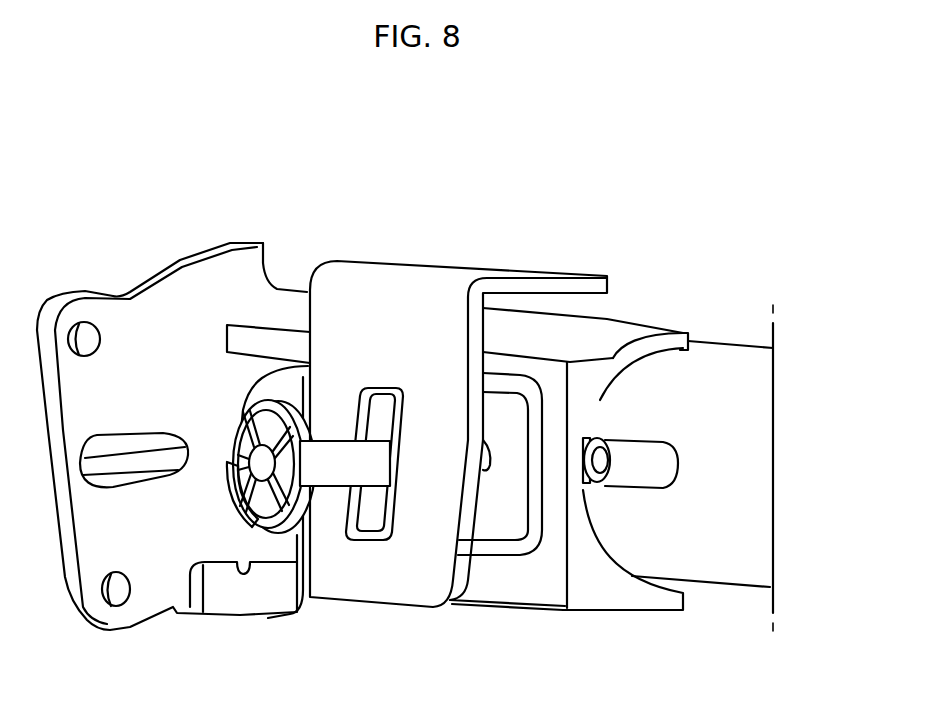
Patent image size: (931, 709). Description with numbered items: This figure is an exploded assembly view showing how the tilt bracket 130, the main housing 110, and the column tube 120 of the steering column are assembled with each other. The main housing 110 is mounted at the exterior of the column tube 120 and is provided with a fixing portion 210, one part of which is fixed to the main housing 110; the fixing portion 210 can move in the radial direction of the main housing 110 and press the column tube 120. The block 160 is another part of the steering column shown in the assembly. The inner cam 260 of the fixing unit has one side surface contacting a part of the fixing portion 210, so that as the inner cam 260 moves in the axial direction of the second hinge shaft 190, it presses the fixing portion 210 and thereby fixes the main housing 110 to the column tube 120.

The main housing 110 is at (603, 328).
The column tube 120 is at (765, 462).
The tilt bracket 130 is at (486, 275).
The block 160 is at (633, 470).
The second hinge shaft 190 is at (328, 468).
The fixing portion 210 is at (513, 425).
The inner cam 260 is at (308, 527).